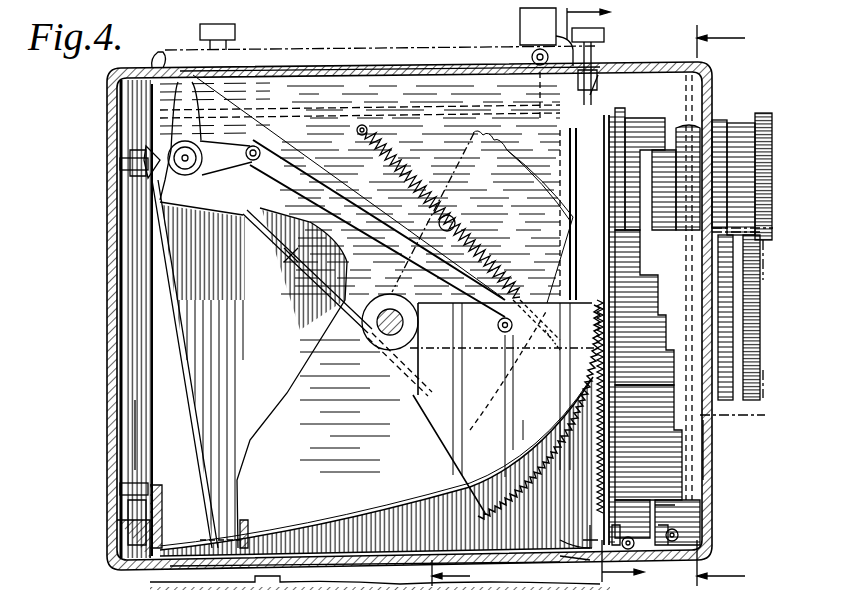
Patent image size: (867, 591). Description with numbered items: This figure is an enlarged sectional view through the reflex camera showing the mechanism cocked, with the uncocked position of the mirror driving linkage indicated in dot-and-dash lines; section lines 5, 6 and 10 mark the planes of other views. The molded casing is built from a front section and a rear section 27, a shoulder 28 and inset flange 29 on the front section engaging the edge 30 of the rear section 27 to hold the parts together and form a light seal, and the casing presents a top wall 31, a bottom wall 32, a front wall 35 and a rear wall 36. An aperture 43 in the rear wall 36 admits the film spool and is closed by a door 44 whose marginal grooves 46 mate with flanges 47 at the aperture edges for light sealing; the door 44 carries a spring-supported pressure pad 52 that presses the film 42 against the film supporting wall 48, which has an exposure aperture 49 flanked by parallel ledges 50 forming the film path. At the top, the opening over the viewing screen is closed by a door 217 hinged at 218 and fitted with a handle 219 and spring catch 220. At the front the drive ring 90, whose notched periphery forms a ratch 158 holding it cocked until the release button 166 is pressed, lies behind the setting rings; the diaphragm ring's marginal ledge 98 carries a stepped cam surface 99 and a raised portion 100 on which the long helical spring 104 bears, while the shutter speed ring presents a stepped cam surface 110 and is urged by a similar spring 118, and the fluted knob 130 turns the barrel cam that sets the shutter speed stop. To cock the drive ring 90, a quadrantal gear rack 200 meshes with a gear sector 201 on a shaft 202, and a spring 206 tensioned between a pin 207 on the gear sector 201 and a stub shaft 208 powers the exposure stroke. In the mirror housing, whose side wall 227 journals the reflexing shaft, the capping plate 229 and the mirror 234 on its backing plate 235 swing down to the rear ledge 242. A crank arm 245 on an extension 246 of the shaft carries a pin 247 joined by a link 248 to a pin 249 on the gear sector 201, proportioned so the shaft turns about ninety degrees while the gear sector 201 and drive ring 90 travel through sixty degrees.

The section line 5- 5 is at (734, 308).
The section line 6- 6 is at (380, 575).
The section line 10- 10 is at (621, 293).
The rear section 27 is at (376, 466).
The shoulder 28 is at (598, 75).
The inset flange 29 is at (592, 531).
The edge 30 is at (560, 540).
The top wall 31 is at (412, 68).
The bottom wall 32 is at (182, 566).
The front wall 35 is at (713, 453).
The rear wall 36 is at (118, 108).
The film 42 is at (140, 415).
The aperture 43 is at (118, 505).
The door 44 is at (110, 370).
The marginal grooves 46 is at (118, 110).
The mating flanges 47 is at (118, 150).
The film supporting wall 48 is at (150, 98).
The aperture 49 is at (156, 490).
The parallel ledges 50 is at (142, 334).
The spring-supported pressure pad 52 is at (120, 196).
The driving ring 90 is at (572, 140).
The marginal ledge 98 is at (632, 122).
The stepped cam surface 99 is at (665, 130).
The raised ledge portion 100 is at (690, 515).
The helical spring 104 is at (680, 535).
The stepped cam surface 110 is at (660, 340).
The helical spring 118 is at (630, 520).
The fluted knob 130 is at (768, 122).
The ratch 158 is at (612, 235).
The release button 166 is at (606, 34).
The quadrantal gear rack 200 is at (590, 520).
The gear sector 201 is at (470, 480).
The shaft 202 is at (380, 348).
The spring 206 is at (458, 160).
The pin 207 is at (553, 356).
The stub shaft 208 is at (370, 132).
The door 217 is at (343, 48).
The hinge 218 is at (532, 58).
The handle 219 is at (236, 32).
The spring catch 220 is at (165, 52).
The side wall 227 is at (300, 380).
The capping plate 229 is at (200, 372).
The reflexing mirror 234 is at (290, 256).
The backing plate 235 is at (312, 292).
The rear ledge 242 is at (248, 520).
The crank arm 245 is at (232, 168).
The extension 246 is at (160, 190).
The pin 247 is at (265, 150).
The link 248 is at (385, 248).
The pin 249 is at (503, 335).